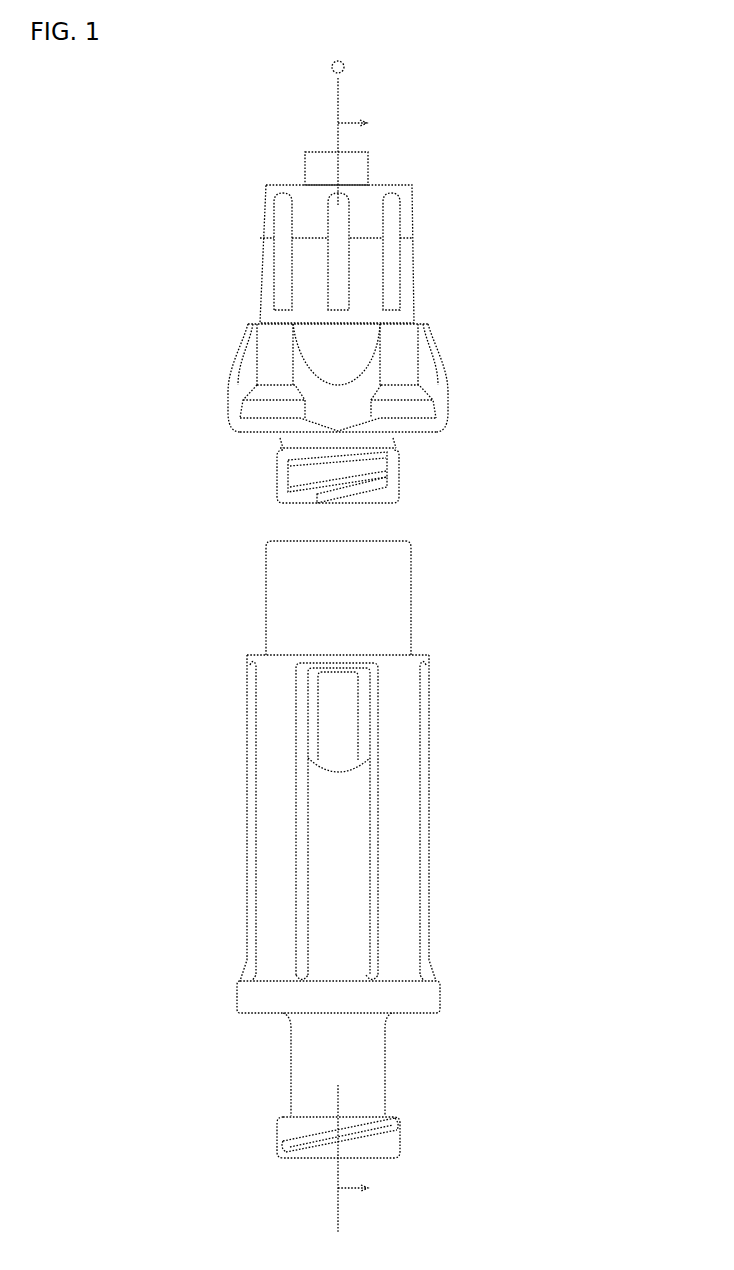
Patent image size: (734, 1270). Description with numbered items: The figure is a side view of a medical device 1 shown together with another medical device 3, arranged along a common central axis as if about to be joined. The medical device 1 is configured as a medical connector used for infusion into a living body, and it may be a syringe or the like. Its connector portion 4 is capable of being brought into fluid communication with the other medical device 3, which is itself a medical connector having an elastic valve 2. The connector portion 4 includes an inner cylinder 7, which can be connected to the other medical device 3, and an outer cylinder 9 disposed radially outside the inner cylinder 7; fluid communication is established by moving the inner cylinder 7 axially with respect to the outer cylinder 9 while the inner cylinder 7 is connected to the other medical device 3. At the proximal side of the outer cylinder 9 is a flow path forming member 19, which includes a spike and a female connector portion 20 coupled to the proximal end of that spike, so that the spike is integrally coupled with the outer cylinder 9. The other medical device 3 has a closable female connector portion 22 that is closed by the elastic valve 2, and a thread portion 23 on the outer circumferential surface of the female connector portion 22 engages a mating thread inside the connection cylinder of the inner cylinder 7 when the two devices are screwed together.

The medical device 1 is at (562, 588).
The elastic valve 2 is at (357, 502).
The another medical device 3 is at (538, 375).
The connector portion 4 is at (433, 623).
The inner cylinder 7 is at (411, 577).
The outer cylinder 9 is at (430, 825).
The flow path forming member 19 is at (387, 1048).
The female connector portion 20 is at (368, 1097).
The closable female connector portion 22 is at (402, 467).
The thread portion 23 is at (400, 487).